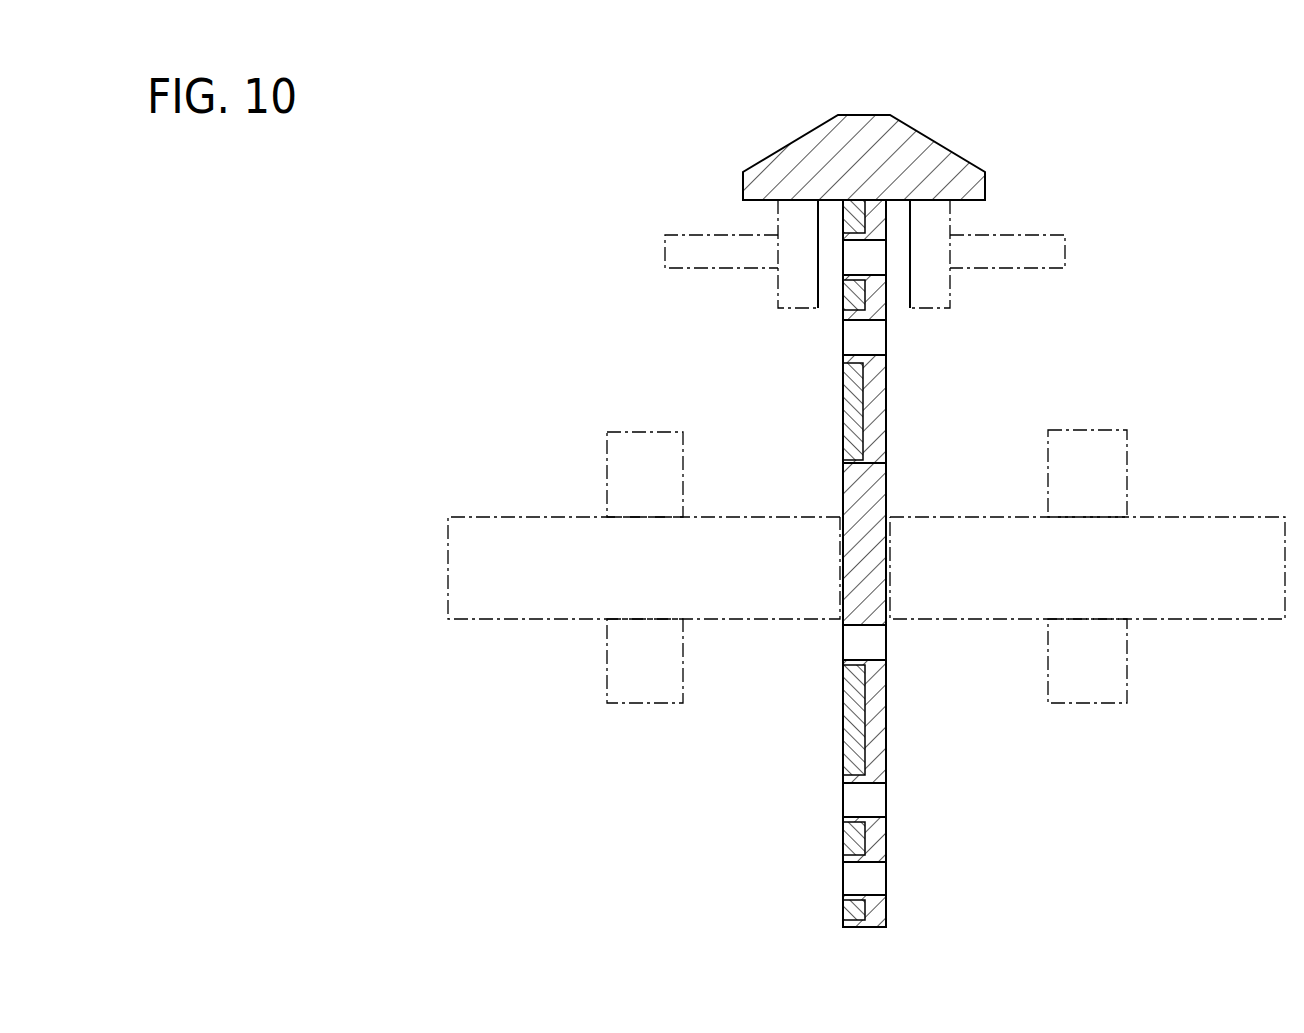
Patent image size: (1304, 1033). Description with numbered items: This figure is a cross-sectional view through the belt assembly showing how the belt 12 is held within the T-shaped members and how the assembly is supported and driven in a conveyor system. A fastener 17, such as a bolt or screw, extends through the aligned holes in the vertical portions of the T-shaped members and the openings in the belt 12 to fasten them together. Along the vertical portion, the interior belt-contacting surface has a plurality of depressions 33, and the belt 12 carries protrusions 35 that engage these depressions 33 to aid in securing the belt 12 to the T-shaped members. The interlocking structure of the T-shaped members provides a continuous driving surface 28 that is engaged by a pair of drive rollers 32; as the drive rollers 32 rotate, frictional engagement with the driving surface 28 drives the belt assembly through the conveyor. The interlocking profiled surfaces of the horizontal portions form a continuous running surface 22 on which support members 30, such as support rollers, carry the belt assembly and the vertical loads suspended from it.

The belt 12 is at (828, 435).
The fastener 17 is at (885, 333).
The running surface 22 is at (977, 200).
The driving surface 28 is at (843, 547).
The support members 30 is at (950, 298).
The drive rollers 32 is at (498, 619).
The depressions 33 is at (870, 205).
The protrusions 35 is at (843, 222).